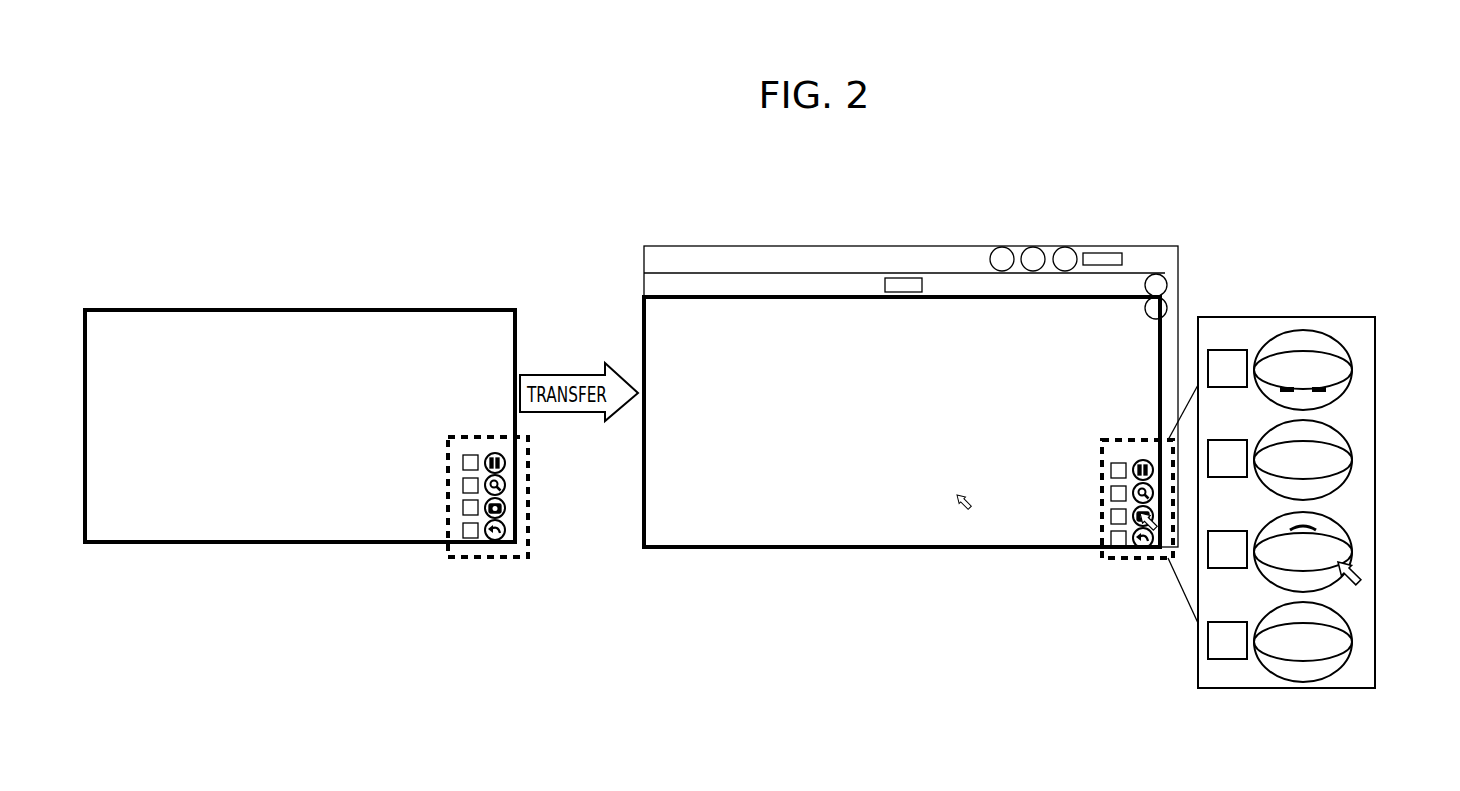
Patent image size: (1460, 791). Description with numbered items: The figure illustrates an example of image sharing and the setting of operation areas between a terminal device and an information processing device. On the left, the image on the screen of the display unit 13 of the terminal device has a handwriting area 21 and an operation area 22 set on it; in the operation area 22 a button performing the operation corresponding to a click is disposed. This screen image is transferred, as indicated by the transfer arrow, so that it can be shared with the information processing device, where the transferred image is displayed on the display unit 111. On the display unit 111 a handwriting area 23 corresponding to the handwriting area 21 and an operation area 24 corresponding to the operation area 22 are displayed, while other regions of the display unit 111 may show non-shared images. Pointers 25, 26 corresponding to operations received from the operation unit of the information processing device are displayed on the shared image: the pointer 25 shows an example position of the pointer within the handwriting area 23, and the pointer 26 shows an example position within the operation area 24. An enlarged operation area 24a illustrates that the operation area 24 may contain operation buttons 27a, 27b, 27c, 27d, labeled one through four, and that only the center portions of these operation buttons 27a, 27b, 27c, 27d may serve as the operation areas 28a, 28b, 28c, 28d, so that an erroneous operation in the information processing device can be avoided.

The display unit 13 is at (332, 444).
The handwriting area 21 is at (507, 328).
The operation area 22 is at (493, 560).
The display unit 111 is at (876, 436).
The handwriting area 23 is at (652, 460).
The operation area 24 is at (1131, 558).
The operation area 24a is at (1300, 536).
The pointer 25 is at (962, 513).
The pointer 26 is at (1156, 550).
The operation button 27a is at (1348, 384).
The operation button 27b is at (1348, 472).
The operation button 27c is at (1352, 564).
The operation button 27d is at (1348, 654).
The operation area 28a is at (1337, 352).
The operation area 28b is at (1337, 441).
The operation area 28c is at (1337, 533).
The operation area 28d is at (1337, 624).